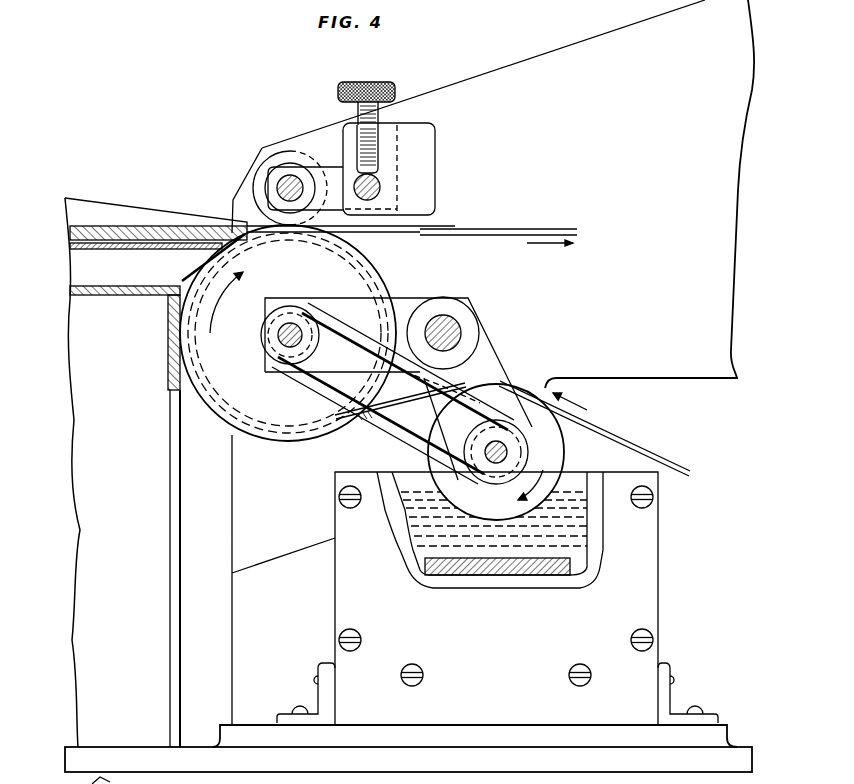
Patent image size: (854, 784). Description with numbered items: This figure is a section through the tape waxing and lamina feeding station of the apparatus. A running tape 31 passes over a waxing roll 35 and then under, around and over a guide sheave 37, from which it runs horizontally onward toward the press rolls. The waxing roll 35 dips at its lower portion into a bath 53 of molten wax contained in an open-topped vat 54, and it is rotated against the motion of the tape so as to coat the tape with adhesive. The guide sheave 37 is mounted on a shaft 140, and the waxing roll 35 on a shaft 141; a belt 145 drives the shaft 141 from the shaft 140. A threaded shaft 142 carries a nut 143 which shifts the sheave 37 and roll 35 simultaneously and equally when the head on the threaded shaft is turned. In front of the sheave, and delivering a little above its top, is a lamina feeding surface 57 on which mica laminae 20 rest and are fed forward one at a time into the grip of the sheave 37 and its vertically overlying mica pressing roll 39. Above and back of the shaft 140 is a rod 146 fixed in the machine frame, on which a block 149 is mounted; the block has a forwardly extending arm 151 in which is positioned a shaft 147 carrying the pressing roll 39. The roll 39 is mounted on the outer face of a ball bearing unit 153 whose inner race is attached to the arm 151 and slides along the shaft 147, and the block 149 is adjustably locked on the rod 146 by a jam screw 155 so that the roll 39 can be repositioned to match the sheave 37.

The mica laminae 20 is at (138, 225).
The tape 31 is at (462, 228).
The waxing roll 35 is at (555, 452).
The guide sheave 37 is at (260, 417).
The mica pressing roll 39 is at (258, 176).
The bath of molten wax 53 is at (575, 538).
The vat 54 is at (652, 567).
The lamina feeding surface 57 is at (121, 228).
The shaft 140 is at (277, 335).
The shaft 141 is at (507, 452).
The threaded shaft 142 is at (460, 328).
The nut 143 is at (470, 340).
The belt 145 is at (390, 428).
The rod 146 is at (380, 187).
The shaft 147 is at (282, 175).
The block 149 is at (422, 140).
The arm 151 is at (305, 173).
The ball bearing unit 153 is at (263, 186).
The jam screw 155 is at (377, 83).